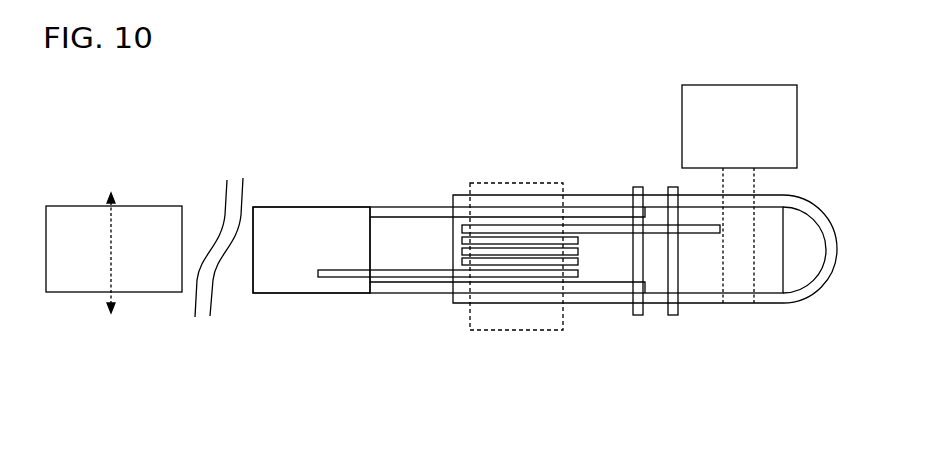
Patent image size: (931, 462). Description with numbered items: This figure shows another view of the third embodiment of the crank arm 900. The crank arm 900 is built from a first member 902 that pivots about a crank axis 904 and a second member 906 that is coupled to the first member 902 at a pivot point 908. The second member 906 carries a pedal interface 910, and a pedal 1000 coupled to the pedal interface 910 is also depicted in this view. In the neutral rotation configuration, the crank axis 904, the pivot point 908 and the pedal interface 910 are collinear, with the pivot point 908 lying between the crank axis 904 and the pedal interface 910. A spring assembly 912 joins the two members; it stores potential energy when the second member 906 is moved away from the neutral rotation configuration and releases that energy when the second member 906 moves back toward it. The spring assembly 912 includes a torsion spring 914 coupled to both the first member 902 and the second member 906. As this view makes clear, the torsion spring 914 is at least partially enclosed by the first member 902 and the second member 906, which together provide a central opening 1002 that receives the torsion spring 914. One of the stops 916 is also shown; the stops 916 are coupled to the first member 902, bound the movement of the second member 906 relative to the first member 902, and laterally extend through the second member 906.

The crank arm 900 is at (830, 343).
The first member 902 is at (293, 207).
The crank axis 904 is at (111, 240).
The second member 906 is at (582, 195).
The pivot point 908 is at (518, 178).
The pedal interface 910 is at (742, 195).
The spring assembly 912 is at (312, 217).
The torsion spring 914 is at (403, 270).
The stops 916 is at (638, 315).
The pedal 1000 is at (703, 84).
The central opening 1002 is at (598, 268).